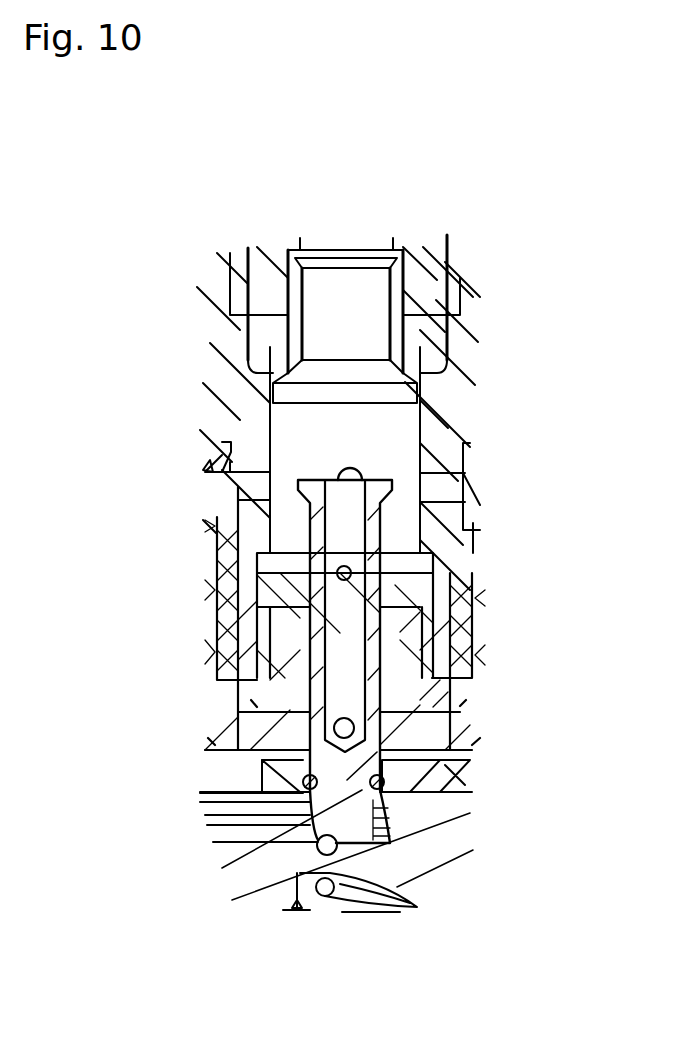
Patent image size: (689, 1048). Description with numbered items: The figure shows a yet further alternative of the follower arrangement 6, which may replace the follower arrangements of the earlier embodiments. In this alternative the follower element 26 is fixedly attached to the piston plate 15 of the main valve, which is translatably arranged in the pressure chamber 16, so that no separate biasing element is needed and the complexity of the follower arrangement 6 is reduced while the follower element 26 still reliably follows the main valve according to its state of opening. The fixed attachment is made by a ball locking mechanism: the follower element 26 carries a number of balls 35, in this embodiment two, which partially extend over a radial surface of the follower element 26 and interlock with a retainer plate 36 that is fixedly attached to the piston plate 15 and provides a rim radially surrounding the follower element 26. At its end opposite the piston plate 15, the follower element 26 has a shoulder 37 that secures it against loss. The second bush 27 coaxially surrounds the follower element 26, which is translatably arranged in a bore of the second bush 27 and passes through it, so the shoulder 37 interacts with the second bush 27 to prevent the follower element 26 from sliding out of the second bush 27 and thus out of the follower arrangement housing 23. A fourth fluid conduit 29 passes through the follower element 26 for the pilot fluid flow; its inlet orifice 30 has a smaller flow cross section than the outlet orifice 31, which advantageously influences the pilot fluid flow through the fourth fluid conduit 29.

The follower arrangement 6 is at (190, 312).
The follower arrangement housing 23 is at (443, 390).
The shoulder 37 is at (312, 480).
The fourth fluid conduit 29 is at (330, 640).
The inlet orifice 30 is at (350, 572).
The outlet orifice 31 is at (335, 722).
The second bush 27 is at (400, 667).
The follower element 26 is at (357, 772).
The pressure chamber 16 is at (237, 771).
The balls 35 is at (305, 802).
The retainer plate 36 is at (418, 777).
The piston plate 15 is at (421, 870).